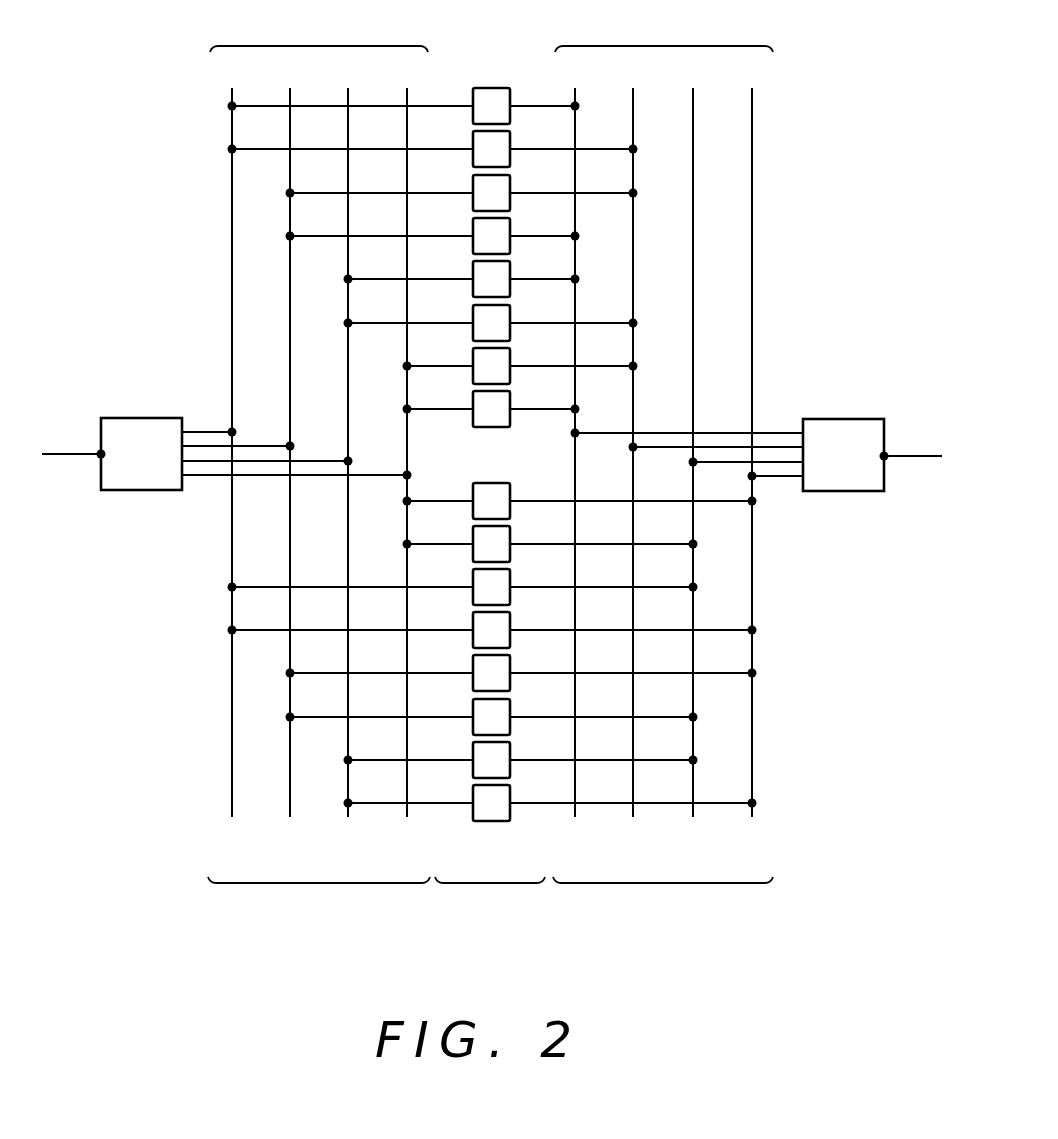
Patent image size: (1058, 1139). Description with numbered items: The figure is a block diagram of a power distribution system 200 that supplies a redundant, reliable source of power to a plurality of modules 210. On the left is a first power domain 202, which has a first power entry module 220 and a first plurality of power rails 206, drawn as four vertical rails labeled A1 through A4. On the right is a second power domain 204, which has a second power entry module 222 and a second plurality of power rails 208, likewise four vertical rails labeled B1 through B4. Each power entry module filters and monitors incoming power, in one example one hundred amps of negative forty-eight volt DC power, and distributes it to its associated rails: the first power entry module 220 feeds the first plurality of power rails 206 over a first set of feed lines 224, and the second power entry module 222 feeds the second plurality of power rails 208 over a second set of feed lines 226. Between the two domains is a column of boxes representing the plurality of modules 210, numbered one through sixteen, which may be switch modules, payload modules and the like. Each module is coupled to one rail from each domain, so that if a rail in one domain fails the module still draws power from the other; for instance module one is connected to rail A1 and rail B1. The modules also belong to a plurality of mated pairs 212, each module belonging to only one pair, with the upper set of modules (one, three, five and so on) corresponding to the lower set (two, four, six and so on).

The power distribution system 200 is at (465, 986).
The first power domain 202 is at (319, 50).
The second power domain 204 is at (664, 50).
The first plurality of power rails 206 is at (319, 500).
The second plurality of power rails 208 is at (663, 500).
The plurality of modules 210 is at (492, 480).
The plurality of mated pairs 212 is at (490, 87).
The first power entry module 220 is at (132, 491).
The second power entry module 222 is at (840, 492).
The first set of feed lines 224 is at (209, 418).
The second set of feed lines 226 is at (773, 420).